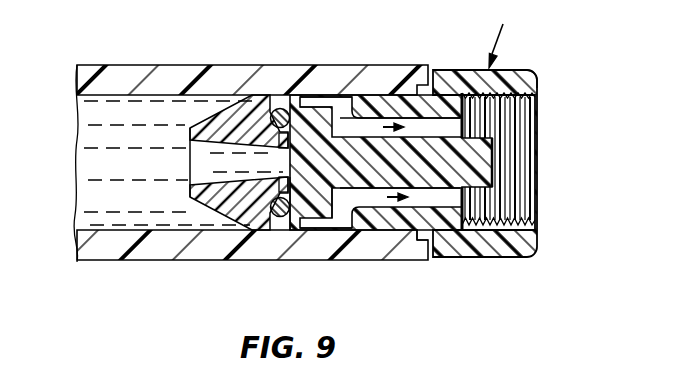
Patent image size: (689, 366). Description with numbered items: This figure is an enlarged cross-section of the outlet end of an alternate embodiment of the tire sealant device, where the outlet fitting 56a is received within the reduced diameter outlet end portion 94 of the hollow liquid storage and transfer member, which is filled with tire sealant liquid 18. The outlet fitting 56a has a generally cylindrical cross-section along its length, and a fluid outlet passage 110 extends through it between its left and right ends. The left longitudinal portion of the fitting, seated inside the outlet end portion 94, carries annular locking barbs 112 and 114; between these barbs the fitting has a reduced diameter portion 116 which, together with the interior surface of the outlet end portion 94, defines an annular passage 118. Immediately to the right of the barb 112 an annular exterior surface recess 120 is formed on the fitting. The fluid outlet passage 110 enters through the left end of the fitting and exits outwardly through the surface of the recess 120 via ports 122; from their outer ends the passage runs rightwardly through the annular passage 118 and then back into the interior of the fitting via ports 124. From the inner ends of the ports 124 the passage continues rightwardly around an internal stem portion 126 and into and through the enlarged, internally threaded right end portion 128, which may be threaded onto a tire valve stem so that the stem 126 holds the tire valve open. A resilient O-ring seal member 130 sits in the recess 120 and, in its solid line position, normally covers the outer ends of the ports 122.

The tire sealant liquid 18 is at (100, 122).
The outlet fitting 56a is at (511, 38).
The outlet end portion 94 is at (116, 261).
The fluid outlet passage 110 is at (524, 143).
The annular locking barb 112 is at (270, 100).
The annular locking barb 114 is at (398, 238).
The reduced diameter portion 116 is at (303, 231).
The annular passage 118 is at (343, 229).
The annular exterior surface recess 120 is at (305, 100).
The ports 122 is at (358, 114).
The ports 124 is at (416, 105).
The internal stem portion 126 is at (467, 175).
The internally threaded right end portion 128 is at (530, 71).
The resilient O-ring seal member 130 is at (271, 110).